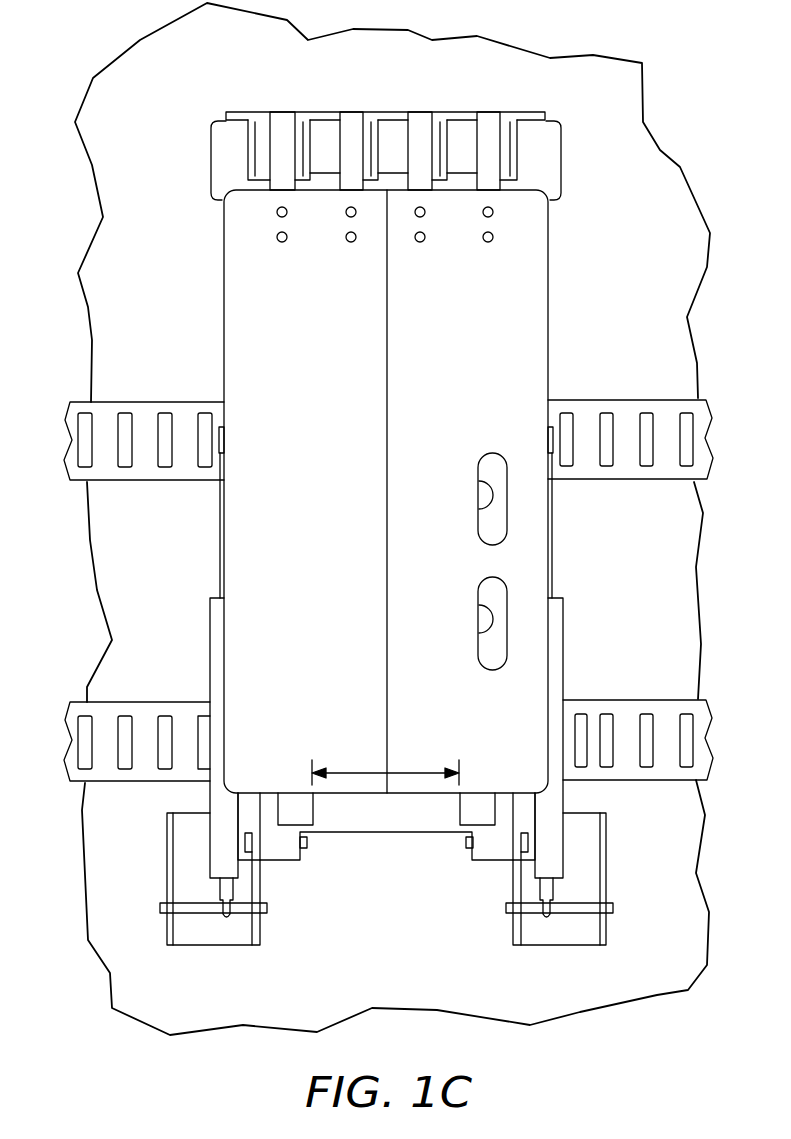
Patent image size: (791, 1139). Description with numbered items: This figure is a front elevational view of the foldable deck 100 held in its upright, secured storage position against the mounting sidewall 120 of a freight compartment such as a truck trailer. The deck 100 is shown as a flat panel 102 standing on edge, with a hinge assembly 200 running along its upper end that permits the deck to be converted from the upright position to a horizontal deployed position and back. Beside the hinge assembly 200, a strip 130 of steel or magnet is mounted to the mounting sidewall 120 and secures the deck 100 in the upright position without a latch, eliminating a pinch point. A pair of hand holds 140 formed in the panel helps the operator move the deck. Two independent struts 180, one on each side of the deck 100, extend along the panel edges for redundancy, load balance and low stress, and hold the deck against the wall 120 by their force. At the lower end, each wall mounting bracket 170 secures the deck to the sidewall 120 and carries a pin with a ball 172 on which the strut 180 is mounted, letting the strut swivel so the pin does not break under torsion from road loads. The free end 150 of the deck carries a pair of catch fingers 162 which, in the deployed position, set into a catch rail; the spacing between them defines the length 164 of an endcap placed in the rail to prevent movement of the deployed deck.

The foldable deck 100 is at (216, 353).
The panel 102 is at (483, 373).
The mounting sidewall 120 is at (645, 549).
The strip 130 is at (563, 153).
The hand holds 140 is at (480, 483).
The free end 150 is at (368, 822).
The catch fingers 162 is at (298, 807).
The length 164 is at (415, 770).
The wall mounting bracket 170 is at (513, 928).
The ball 172 is at (223, 917).
The struts 180 is at (210, 652).
The hinge assembly 200 is at (252, 92).